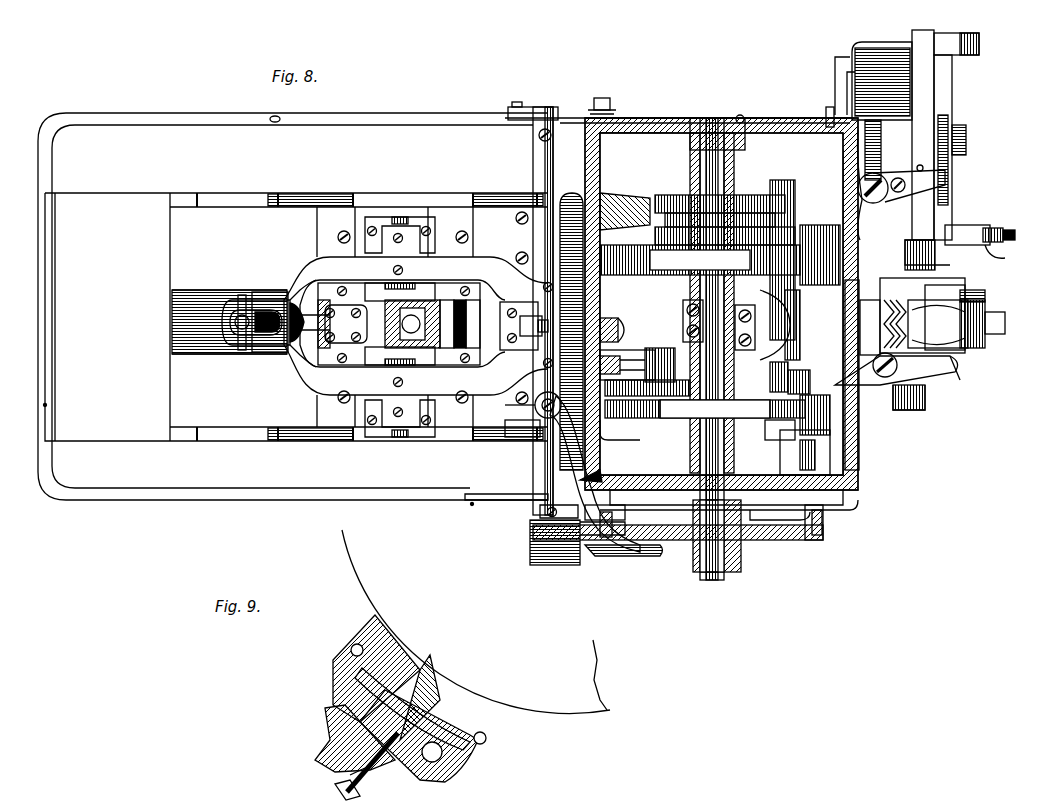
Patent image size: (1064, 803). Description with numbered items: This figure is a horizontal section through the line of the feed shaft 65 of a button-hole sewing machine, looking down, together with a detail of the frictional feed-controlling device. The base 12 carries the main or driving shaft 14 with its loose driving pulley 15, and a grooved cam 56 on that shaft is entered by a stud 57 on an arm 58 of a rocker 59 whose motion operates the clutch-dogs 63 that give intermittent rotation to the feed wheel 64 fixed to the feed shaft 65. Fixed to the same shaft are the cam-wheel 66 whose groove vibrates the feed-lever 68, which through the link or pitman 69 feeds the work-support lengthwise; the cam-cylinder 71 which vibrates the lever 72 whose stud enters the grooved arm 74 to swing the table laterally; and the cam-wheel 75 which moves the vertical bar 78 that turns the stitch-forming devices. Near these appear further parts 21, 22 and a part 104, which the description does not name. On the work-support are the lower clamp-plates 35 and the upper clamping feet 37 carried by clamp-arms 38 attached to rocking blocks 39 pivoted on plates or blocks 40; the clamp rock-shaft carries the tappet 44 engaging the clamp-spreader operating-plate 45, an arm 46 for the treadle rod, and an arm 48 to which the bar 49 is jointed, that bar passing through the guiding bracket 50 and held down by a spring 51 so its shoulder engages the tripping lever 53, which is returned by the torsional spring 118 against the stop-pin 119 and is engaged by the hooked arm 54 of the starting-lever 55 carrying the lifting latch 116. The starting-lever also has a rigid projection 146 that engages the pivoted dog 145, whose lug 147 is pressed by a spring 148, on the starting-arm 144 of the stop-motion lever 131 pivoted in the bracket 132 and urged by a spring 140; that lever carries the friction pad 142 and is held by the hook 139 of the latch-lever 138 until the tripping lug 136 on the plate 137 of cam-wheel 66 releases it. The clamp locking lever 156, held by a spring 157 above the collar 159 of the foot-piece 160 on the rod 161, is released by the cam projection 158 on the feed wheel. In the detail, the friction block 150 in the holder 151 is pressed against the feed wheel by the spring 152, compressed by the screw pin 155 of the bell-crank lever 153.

In FIG. 8, the base 12 is at (200, 497).
In FIG. 8, the arm 74 is at (186, 200).
In FIG. 8, the lower clamp-plates 35 is at (172, 312).
In FIG. 8, the upper clamping plates or clamping feet 37 is at (236, 345).
In FIG. 8, the clamp-arms 38 is at (416, 326).
In FIG. 8, the clamp-spreader operating-plate 45 is at (505, 300).
In FIG. 8, the arm or tappet 44 is at (536, 336).
In FIG. 8, the rocking blocks 39 is at (412, 220).
In FIG. 8, the plates or blocks 40 is at (436, 238).
In FIG. 8, the arm 48 is at (533, 106).
In FIG. 8, the arm 46 is at (484, 502).
In FIG. 8, the clamp locking lever 156 is at (575, 455).
In FIG. 8, the bar 49 is at (656, 120).
In FIG. 8, the spring 51 is at (677, 106).
In FIG. 8, the feed shaft 65 is at (722, 372).
In FIG. 8, the lever 72 is at (625, 202).
In FIG. 8, the cam-cylinder 71 is at (725, 209).
In FIG. 8, the cam-wheel 75 is at (700, 260).
In FIG. 8, the grooved cam 56 is at (812, 255).
In FIG. 8, the vertical bar 78 is at (619, 330).
In FIG. 8, the link or pitman 69 is at (612, 360).
In FIG. 8, the feed-lever 68 is at (640, 396).
In FIG. 8, the cam-wheel 66 is at (675, 418).
In FIG. 8, the spring 157 is at (629, 448).
In FIG. 8, the screws 22 is at (705, 338).
In FIG. 8, the screws 21 is at (766, 348).
In FIG. 8, the stud 57 is at (766, 377).
In FIG. 8, the arm 58 is at (790, 394).
In FIG. 8, the rocker 59 is at (775, 430).
In FIG. 8, the plate 137 is at (812, 436).
In FIG. 8, the clutch-dogs 63 is at (790, 540).
In FIG. 8, the wheel 64 is at (808, 541).
In FIG. 9, the wheel 64 is at (476, 622).
In FIG. 8, the rod 161 is at (575, 395).
In FIG. 8, the cam or projection 158 is at (618, 555).
In FIG. 8, the collar 159 is at (506, 406).
In FIG. 8, the foot-piece 160 is at (505, 423).
In FIG. 8, the bracket 104 is at (836, 70).
In FIG. 8, the steadying and guiding bracket 50 is at (829, 107).
In FIG. 8, the starting-lever 55 is at (956, 78).
In FIG. 8, the lifting latch 116 is at (962, 125).
In FIG. 8, the retaining hooked arm 54 is at (955, 165).
In FIG. 8, the tripping lever 53 is at (881, 150).
In FIG. 8, the stop-pin 119 is at (920, 168).
In FIG. 8, the torsional spring 118 is at (874, 185).
In FIG. 8, the rigid projection 146 is at (945, 234).
In FIG. 8, the lug 147 is at (982, 225).
In FIG. 8, the pivoted dog 145 is at (995, 228).
In FIG. 8, the spring 148 is at (1012, 230).
In FIG. 8, the starting-arm 144 is at (1012, 257).
In FIG. 8, the spring 140 is at (903, 255).
In FIG. 8, the bracket 132 is at (892, 268).
In FIG. 8, the stop-motion lever 131 is at (947, 324).
In FIG. 8, the friction pad 142 is at (978, 292).
In FIG. 8, the main or driving shaft 14 is at (1005, 325).
In FIG. 8, the latch-lever 138 is at (896, 369).
In FIG. 8, the hook 139 is at (960, 378).
In FIG. 8, the driving pulley 15 is at (926, 402).
In FIG. 8, the tripping lug or projection 136 is at (860, 425).
In FIG. 9, the friction block 150 is at (450, 690).
In FIG. 9, the spring 152 is at (345, 672).
In FIG. 9, the bell-crank lever 153 is at (325, 722).
In FIG. 9, the holder 151 is at (485, 740).
In FIG. 9, the adjustable screw pin 155 is at (345, 788).